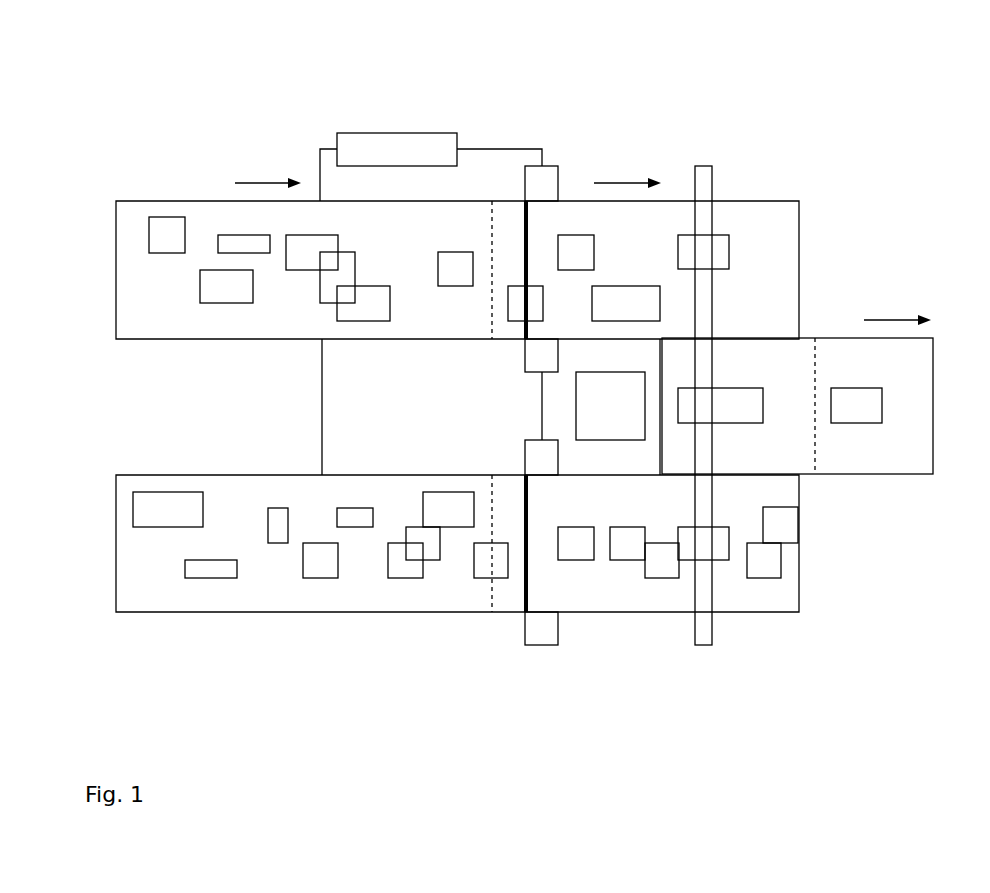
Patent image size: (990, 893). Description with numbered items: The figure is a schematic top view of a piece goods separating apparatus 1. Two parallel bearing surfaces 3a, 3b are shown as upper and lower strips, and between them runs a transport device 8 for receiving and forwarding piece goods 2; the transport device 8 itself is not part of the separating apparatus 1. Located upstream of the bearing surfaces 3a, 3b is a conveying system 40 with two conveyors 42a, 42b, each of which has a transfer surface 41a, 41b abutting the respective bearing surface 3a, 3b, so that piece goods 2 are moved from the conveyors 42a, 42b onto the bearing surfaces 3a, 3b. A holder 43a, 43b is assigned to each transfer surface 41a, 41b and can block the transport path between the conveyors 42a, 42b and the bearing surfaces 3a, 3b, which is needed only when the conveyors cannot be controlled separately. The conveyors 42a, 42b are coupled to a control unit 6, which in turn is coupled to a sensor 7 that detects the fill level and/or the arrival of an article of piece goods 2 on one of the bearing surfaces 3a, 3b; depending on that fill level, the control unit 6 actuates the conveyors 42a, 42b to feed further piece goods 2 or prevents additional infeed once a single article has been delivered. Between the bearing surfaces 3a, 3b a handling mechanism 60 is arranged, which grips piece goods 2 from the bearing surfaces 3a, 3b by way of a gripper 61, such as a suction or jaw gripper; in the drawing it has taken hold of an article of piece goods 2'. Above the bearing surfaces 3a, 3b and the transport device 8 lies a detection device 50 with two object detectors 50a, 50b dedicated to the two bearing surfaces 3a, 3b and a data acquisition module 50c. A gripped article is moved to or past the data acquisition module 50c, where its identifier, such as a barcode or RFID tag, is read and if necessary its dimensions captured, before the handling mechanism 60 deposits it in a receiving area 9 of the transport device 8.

The separating apparatus 1 is at (855, 105).
The piece goods 2 is at (128, 157).
The article of piece goods 2' is at (635, 633).
The bearing surface 3a is at (780, 214).
The bearing surface 3b is at (780, 595).
The control unit 6 is at (405, 148).
The sensor 7 is at (540, 180).
The transport device 8 is at (916, 458).
The receiving area 9 is at (780, 440).
The conveying system 40 is at (349, 658).
The transfer surface 41a is at (508, 218).
The transfer surface 41b is at (510, 598).
The conveyor 42a is at (235, 216).
The conveyor 42b is at (270, 598).
The holder 43a is at (528, 218).
The holder 43b is at (528, 568).
The detection device 50 is at (719, 670).
The object detector 50a is at (722, 248).
The object detector 50b is at (683, 543).
The data acquisition module 50c is at (746, 403).
The handling mechanism 60 is at (590, 407).
The gripper 61 is at (618, 484).